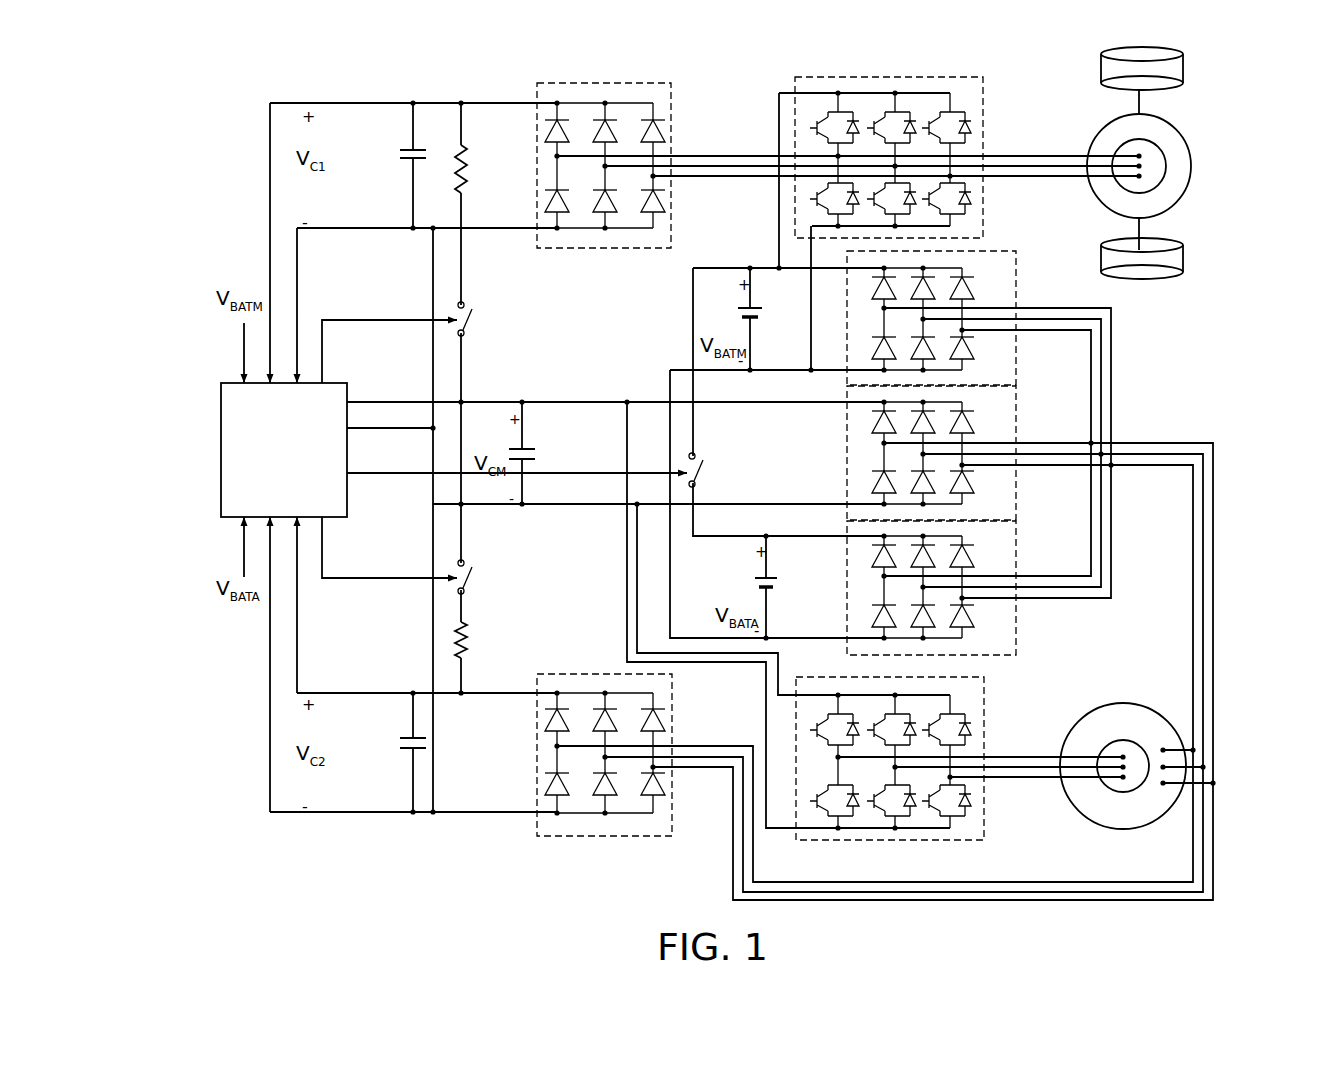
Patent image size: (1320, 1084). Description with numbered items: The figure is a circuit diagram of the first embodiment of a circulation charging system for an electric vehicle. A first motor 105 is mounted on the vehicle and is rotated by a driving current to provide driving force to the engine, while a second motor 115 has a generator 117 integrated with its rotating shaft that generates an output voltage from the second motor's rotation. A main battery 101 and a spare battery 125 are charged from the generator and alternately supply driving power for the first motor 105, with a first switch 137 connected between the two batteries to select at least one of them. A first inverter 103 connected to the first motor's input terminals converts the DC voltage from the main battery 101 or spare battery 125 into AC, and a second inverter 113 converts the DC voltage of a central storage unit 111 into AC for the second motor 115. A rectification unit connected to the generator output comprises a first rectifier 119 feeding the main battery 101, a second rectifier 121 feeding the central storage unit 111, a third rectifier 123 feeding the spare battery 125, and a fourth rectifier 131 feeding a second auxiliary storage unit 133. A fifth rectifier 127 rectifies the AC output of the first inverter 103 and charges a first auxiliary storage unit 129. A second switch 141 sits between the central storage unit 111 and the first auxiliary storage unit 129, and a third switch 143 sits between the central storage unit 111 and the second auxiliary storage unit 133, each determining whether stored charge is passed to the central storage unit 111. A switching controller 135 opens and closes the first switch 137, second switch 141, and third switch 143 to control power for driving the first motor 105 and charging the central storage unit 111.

The main battery 101 is at (738, 308).
The first inverter 103 is at (937, 77).
The first motor 105 is at (1167, 166).
The central storage unit 111 is at (526, 442).
The second inverter 113 is at (986, 714).
The second motor 115 is at (1124, 792).
The generator 117 is at (1124, 703).
The first rectifier 119 is at (1018, 286).
The second rectifier 121 is at (1018, 422).
The third rectifier 123 is at (1018, 556).
The spare battery 125 is at (755, 583).
The fifth rectifier 127 is at (624, 83).
The first auxiliary storage unit 129 is at (418, 140).
The fourth rectifier 131 is at (672, 712).
The second auxiliary storage unit 133 is at (408, 760).
The switching controller 135 is at (221, 450).
The first switch 137 is at (702, 470).
The second switch 141 is at (470, 320).
The third switch 143 is at (470, 578).